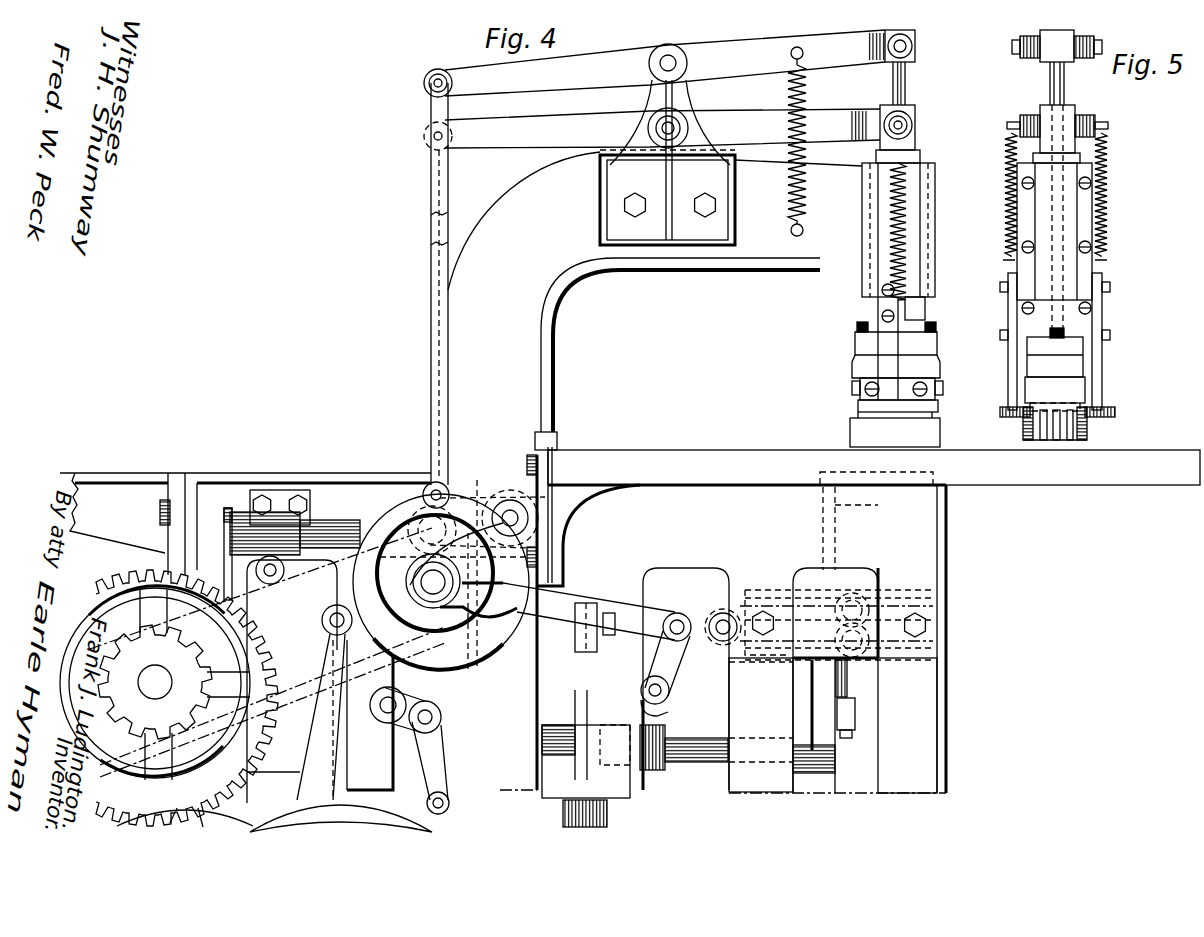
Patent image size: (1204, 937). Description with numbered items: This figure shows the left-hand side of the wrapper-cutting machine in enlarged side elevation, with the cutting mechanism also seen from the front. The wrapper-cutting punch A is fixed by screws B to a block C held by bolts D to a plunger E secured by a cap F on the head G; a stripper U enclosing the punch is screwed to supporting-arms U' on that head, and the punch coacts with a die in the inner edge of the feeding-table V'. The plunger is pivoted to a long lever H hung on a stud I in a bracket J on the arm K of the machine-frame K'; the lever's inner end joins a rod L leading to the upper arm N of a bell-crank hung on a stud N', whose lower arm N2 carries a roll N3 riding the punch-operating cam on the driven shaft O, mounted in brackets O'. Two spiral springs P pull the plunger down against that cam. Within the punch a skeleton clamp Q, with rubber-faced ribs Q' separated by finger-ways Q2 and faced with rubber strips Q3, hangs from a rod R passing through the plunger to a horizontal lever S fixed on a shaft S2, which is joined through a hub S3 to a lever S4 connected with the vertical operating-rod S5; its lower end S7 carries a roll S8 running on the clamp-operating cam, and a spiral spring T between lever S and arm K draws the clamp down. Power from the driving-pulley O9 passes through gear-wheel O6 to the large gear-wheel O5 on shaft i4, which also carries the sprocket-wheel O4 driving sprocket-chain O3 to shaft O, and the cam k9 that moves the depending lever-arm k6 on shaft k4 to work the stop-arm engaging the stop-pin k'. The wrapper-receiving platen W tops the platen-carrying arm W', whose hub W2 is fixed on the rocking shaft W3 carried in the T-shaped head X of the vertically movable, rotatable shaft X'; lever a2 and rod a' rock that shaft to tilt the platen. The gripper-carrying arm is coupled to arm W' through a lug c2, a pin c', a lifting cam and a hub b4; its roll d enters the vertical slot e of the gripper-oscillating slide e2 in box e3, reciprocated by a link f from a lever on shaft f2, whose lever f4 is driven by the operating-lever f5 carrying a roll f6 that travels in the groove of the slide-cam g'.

In FIG. 4, the horizontal lever S is at (832, 48).
In FIG. 5, the horizontal lever S is at (1042, 62).
In FIG. 4, the shaft S2 is at (666, 56).
In FIG. 4, the hub S3 is at (686, 70).
In FIG. 4, the lever S4 is at (665, 63).
In FIG. 4, the operating-rod S5 is at (448, 190).
In FIG. 4, the lower end of operating-rod S7 is at (575, 560).
In FIG. 4, the antifriction-roll S8 is at (490, 660).
In FIG. 4, the spiral spring T is at (807, 96).
In FIG. 4, the stud I is at (682, 124).
In FIG. 4, the long lever H is at (680, 127).
In FIG. 5, the long lever H is at (1078, 112).
In FIG. 4, the rod R is at (906, 90).
In FIG. 5, the rod R is at (1066, 86).
In FIG. 4, the plunger E is at (920, 155).
In FIG. 5, the plunger E is at (1090, 165).
In FIG. 4, the spiral springs P is at (906, 176).
In FIG. 5, the spiral springs P is at (1008, 160).
In FIG. 4, the head of the machine G is at (875, 205).
In FIG. 4, the cap F is at (935, 231).
In FIG. 5, the cap F is at (1092, 217).
In FIG. 4, the bracket J is at (667, 197).
In FIG. 4, the arm of machine-frame K is at (655, 301).
In FIG. 4, the machine-frame K' is at (723, 620).
In FIG. 4, the rod L is at (431, 232).
In FIG. 4, the bolts D is at (892, 318).
In FIG. 5, the bolts D is at (1066, 332).
In FIG. 4, the supporting-arms U' is at (851, 351).
In FIG. 5, the supporting-arms U' is at (1048, 345).
In FIG. 4, the stripper U is at (895, 429).
In FIG. 5, the stripper U is at (1068, 392).
In FIG. 4, the block C is at (896, 355).
In FIG. 5, the block C is at (1083, 362).
In FIG. 4, the screws B is at (860, 396).
In FIG. 5, the screws B is at (1085, 388).
In FIG. 4, the wrapper-cutting punch A is at (940, 406).
In FIG. 5, the wrapper-cutting punch A is at (1085, 400).
In FIG. 4, the feeding-table V' is at (874, 456).
In FIG. 4, the driven shaft O is at (441, 582).
In FIG. 4, the brackets O' is at (506, 518).
In FIG. 4, the sprocket-chain O3 is at (283, 585).
In FIG. 4, the sprocket-wheel O4 is at (155, 683).
In FIG. 4, the large gear-wheel O5 is at (95, 615).
In FIG. 4, the large gear-wheel O6 is at (170, 822).
In FIG. 4, the driving-pulley O9 is at (341, 818).
In FIG. 4, the upper arm of bell-crank lever N is at (440, 511).
In FIG. 4, the stud N' is at (462, 575).
In FIG. 4, the lower arm of bell-crank lever N2 is at (545, 548).
In FIG. 4, the antifriction-roll N3 is at (516, 655).
In FIG. 4, the stop-pin k' is at (270, 522).
In FIG. 4, the shaft k4 is at (330, 524).
In FIG. 4, the depending lever-arm k6 is at (228, 568).
In FIG. 4, the cam k9 is at (158, 682).
In FIG. 4, the shaft i4 is at (155, 682).
In FIG. 4, the rod a' is at (548, 646).
In FIG. 4, the lever a2 is at (335, 648).
In FIG. 4, the gripper-oscillating slide-cam g' is at (412, 741).
In FIG. 4, the link f is at (703, 610).
In FIG. 4, the shaft f2 is at (670, 690).
In FIG. 4, the lever f4 is at (680, 660).
In FIG. 4, the operating-lever f5 is at (616, 612).
In FIG. 4, the antifriction-roll f6 is at (521, 679).
In FIG. 4, the antifriction-roll d is at (852, 604).
In FIG. 4, the vertical slot e is at (852, 640).
In FIG. 4, the gripper-oscillating slide e2 is at (860, 606).
In FIG. 4, the box e3 is at (846, 606).
In FIG. 4, the hub b4 is at (856, 632).
In FIG. 4, the wrapper-receiving platen W is at (811, 639).
In FIG. 4, the platen-carrying arm W' is at (814, 725).
In FIG. 4, the hub W2 is at (814, 773).
In FIG. 4, the shaft W3 is at (685, 738).
In FIG. 4, the pin c' is at (852, 678).
In FIG. 4, the lug c2 is at (855, 712).
In FIG. 4, the T-shaped head X is at (586, 744).
In FIG. 4, the shaft X' is at (595, 815).
In FIG. 5, the skeleton clamp Q is at (1084, 423).
In FIG. 5, the rubber-faced ribs Q' is at (1088, 435).
In FIG. 5, the finger-ways Q2 is at (1062, 442).
In FIG. 5, the rubber strips Q3 is at (1046, 442).